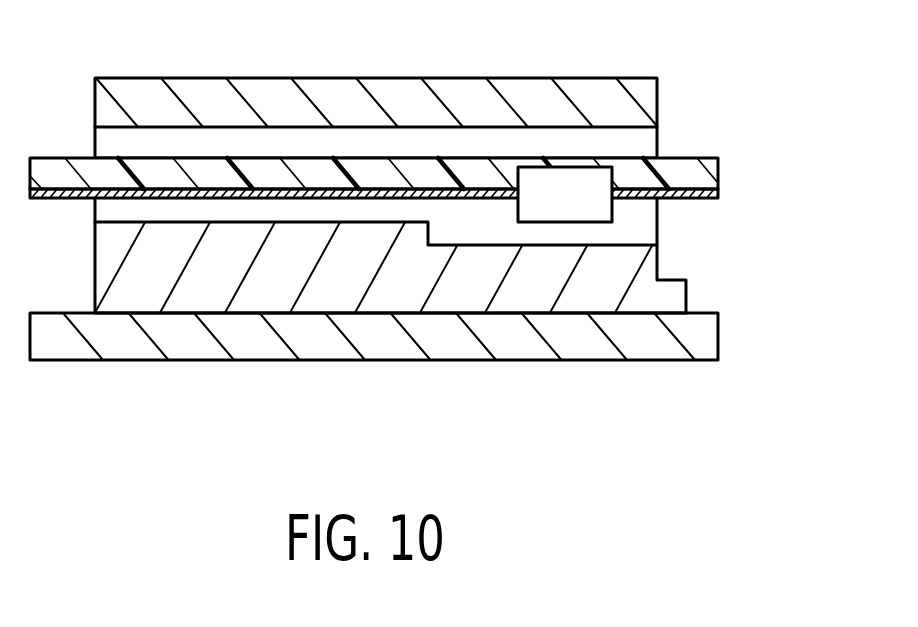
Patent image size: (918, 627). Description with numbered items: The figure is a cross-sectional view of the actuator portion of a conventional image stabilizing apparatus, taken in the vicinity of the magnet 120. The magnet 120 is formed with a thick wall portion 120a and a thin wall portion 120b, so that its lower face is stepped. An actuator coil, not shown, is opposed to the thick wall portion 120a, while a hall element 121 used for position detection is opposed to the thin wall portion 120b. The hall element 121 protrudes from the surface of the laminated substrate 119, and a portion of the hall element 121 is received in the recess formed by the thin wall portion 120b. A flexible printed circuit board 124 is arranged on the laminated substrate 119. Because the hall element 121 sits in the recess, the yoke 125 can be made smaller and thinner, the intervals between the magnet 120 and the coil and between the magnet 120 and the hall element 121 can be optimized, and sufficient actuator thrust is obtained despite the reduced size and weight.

The laminated substrate 119 is at (703, 175).
The magnet 120 is at (432, 321).
The thick wall portion 120a is at (217, 282).
The thin wall portion 120b is at (547, 280).
The hall element 121 is at (565, 187).
The flexible printed circuit board 124 is at (718, 192).
The yoke 125 is at (644, 101).